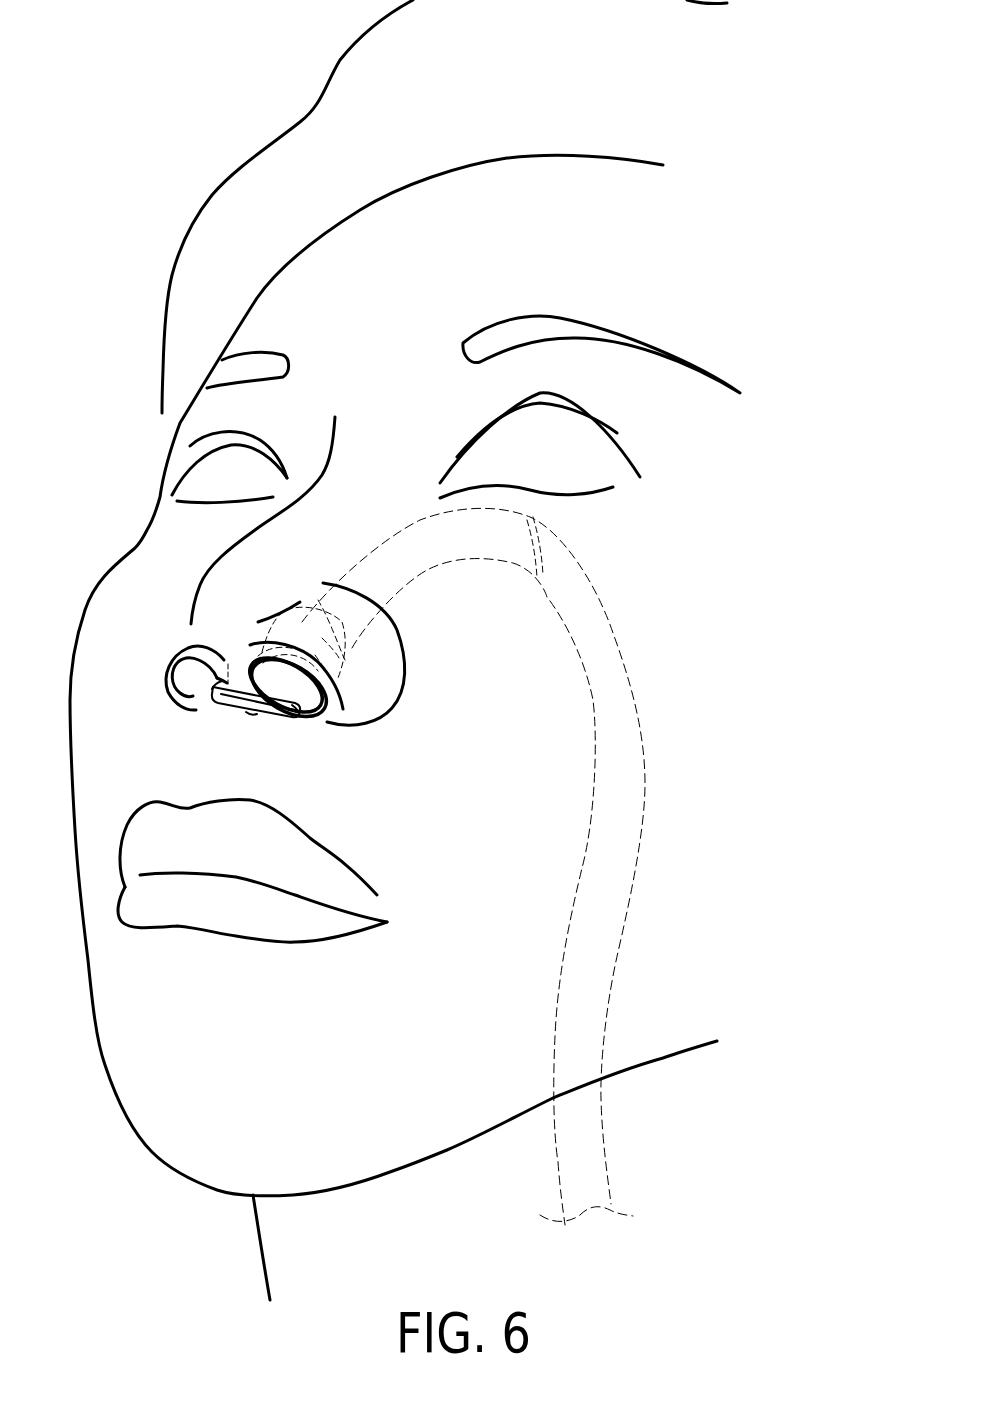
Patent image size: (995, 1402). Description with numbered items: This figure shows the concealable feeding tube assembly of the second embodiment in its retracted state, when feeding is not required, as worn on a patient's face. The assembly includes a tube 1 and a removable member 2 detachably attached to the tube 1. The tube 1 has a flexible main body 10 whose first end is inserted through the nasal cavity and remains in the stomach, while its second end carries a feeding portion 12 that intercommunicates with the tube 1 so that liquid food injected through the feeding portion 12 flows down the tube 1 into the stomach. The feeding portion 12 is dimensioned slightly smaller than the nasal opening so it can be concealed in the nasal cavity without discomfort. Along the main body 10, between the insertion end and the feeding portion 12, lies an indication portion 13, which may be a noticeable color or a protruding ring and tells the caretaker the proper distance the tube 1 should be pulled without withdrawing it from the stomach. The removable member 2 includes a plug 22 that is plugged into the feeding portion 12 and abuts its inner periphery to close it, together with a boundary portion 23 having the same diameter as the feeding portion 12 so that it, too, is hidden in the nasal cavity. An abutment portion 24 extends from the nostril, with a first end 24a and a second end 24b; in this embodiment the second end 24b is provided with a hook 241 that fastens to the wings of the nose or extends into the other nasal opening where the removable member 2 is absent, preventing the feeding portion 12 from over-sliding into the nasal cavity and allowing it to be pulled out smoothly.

The tube 1 is at (668, 664).
The main body 10 is at (605, 633).
The indication portion 13 is at (535, 543).
The removable member 2 is at (368, 640).
The plug 22 is at (338, 658).
The feeding portion 12 is at (328, 676).
The boundary portion 23 is at (310, 713).
The abutment portion 24 is at (237, 703).
The first end of the abutment portion 24a is at (300, 716).
The second end of the abutment portion 24b is at (226, 665).
The hook 241 is at (210, 673).